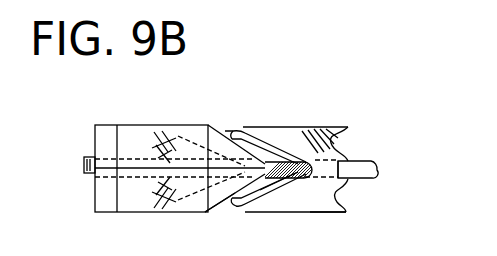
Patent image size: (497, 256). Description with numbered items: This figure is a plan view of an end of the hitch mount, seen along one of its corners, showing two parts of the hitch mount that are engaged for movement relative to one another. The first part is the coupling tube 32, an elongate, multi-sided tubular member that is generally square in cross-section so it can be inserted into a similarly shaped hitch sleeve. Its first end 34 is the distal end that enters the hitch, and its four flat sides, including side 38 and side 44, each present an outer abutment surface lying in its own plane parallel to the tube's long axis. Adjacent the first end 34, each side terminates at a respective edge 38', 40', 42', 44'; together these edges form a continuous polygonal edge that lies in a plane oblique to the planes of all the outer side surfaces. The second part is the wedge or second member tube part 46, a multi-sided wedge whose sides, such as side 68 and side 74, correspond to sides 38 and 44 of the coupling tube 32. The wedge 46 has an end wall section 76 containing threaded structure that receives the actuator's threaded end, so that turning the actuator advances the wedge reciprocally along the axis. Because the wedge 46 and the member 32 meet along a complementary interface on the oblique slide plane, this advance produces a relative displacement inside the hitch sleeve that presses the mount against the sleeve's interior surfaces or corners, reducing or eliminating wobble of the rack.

The second member tube part 46 is at (150, 121).
The side 68 is at (130, 146).
The end wall section 76 is at (93, 147).
The side 74 is at (131, 198).
The edge 40' is at (236, 124).
The edge 38' is at (265, 128).
The first end 34 is at (287, 133).
The coupling tube 32 is at (312, 122).
The side 38 is at (365, 168).
The side 44 is at (352, 204).
The edge 42' is at (192, 222).
The edge 44' is at (308, 211).